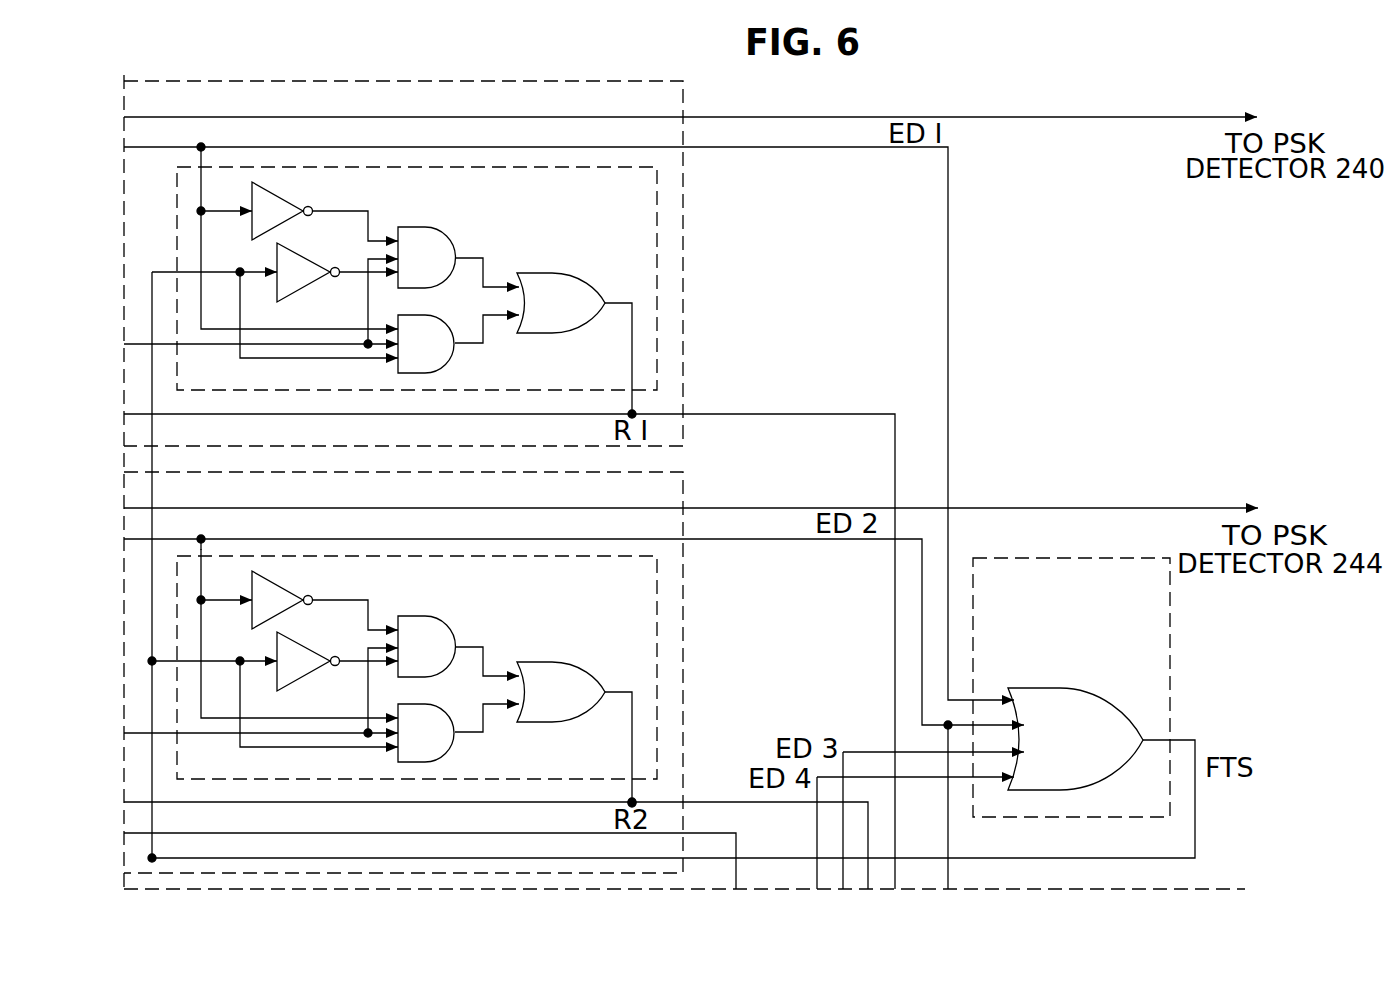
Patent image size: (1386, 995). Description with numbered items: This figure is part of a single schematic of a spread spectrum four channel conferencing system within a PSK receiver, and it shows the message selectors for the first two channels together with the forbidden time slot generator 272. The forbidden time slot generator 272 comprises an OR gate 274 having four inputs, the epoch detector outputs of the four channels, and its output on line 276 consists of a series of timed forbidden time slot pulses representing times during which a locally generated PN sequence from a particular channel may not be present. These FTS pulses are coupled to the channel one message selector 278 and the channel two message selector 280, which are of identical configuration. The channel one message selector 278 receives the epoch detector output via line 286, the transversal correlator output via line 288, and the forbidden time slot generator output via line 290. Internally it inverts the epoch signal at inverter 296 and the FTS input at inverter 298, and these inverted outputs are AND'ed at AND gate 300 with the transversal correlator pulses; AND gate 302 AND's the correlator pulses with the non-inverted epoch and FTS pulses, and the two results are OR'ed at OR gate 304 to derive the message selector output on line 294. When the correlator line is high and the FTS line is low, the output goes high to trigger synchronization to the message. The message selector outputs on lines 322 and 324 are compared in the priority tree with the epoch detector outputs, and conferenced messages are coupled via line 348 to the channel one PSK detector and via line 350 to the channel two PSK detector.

The forbidden time slot generator 272 is at (1070, 669).
The OR gate 274 is at (1060, 690).
The line 276 is at (1182, 740).
The channel one message selector 278 is at (452, 263).
The channel two message selector 280 is at (657, 590).
The line 286 is at (150, 147).
The transversal correlator line 288 is at (263, 345).
The FTS line 290 is at (152, 429).
The message selector output line 294 is at (632, 350).
The inverter 296 is at (277, 220).
The inverter 298 is at (290, 288).
The AND gate 300 is at (432, 232).
The AND gate 302 is at (438, 365).
The OR gate 304 is at (542, 275).
The line 322 is at (742, 414).
The line 324 is at (710, 803).
The line 348 is at (1027, 116).
The line 350 is at (1040, 507).